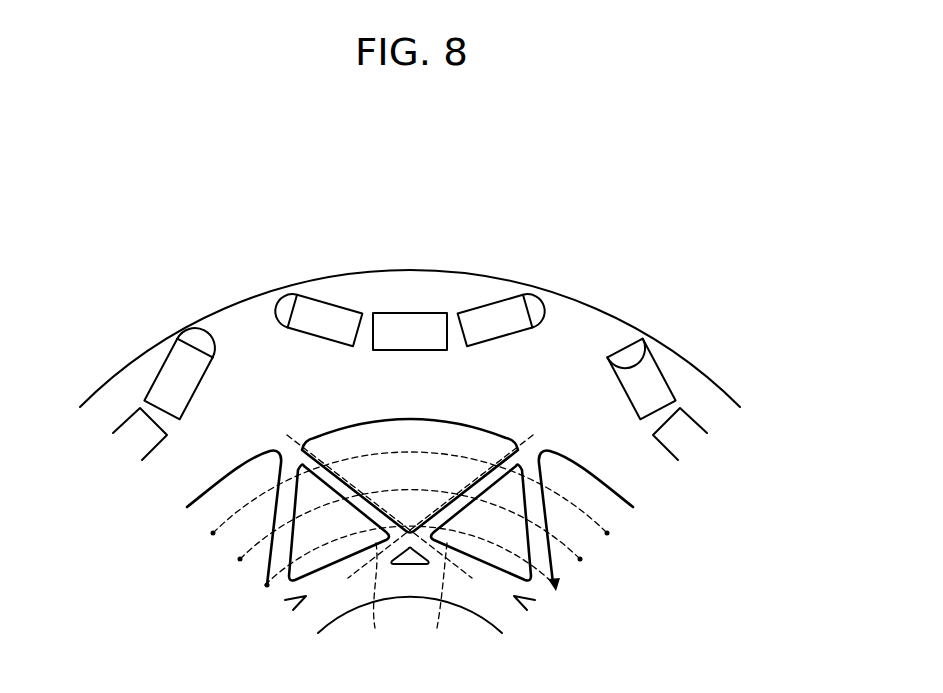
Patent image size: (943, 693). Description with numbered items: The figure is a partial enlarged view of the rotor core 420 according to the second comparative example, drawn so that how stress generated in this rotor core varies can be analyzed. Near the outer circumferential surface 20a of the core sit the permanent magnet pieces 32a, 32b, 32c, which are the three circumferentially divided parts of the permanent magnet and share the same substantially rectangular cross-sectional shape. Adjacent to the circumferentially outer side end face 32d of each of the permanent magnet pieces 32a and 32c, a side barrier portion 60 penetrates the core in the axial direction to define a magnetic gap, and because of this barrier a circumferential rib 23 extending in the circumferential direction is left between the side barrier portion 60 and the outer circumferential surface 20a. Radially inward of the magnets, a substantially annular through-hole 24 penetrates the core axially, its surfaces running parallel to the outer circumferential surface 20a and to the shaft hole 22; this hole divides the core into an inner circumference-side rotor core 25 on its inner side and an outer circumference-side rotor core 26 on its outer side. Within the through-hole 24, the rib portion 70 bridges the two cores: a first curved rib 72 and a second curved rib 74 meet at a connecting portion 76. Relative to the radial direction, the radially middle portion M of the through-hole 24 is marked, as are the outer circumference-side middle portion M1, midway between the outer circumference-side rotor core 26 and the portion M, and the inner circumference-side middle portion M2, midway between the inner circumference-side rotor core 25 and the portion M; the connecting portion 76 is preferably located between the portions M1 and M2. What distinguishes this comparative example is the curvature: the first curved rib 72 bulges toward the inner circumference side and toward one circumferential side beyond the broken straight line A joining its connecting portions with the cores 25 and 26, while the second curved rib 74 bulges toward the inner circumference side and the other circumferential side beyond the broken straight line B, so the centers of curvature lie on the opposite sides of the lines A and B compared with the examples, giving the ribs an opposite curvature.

The rotor core 420 is at (753, 232).
The outer circumferential surface 20a is at (727, 392).
The permanent magnet piece 32b is at (132, 425).
The circumferential rib 23 is at (180, 340).
The permanent magnet piece 32c is at (173, 372).
The permanent magnet piece 32a is at (647, 378).
The circumferentially outer side end face 32d is at (213, 353).
The side barrier portion 60 is at (206, 345).
The rib portion 70 is at (470, 214).
The first curved rib 72 is at (343, 493).
The second curved rib 74 is at (478, 487).
The through-hole 24 is at (313, 533).
The outer circumference-side rotor core 26 is at (643, 468).
The outer circumference-side middle portion M1 is at (624, 539).
The radially middle portion M is at (593, 566).
The inner circumference-side middle portion M2 is at (428, 567).
The connecting portion 76 is at (412, 562).
The straight line A is at (437, 598).
The straight line B is at (378, 598).
The shaft hole 22 is at (472, 617).
The inner circumference-side rotor core 25 is at (497, 610).